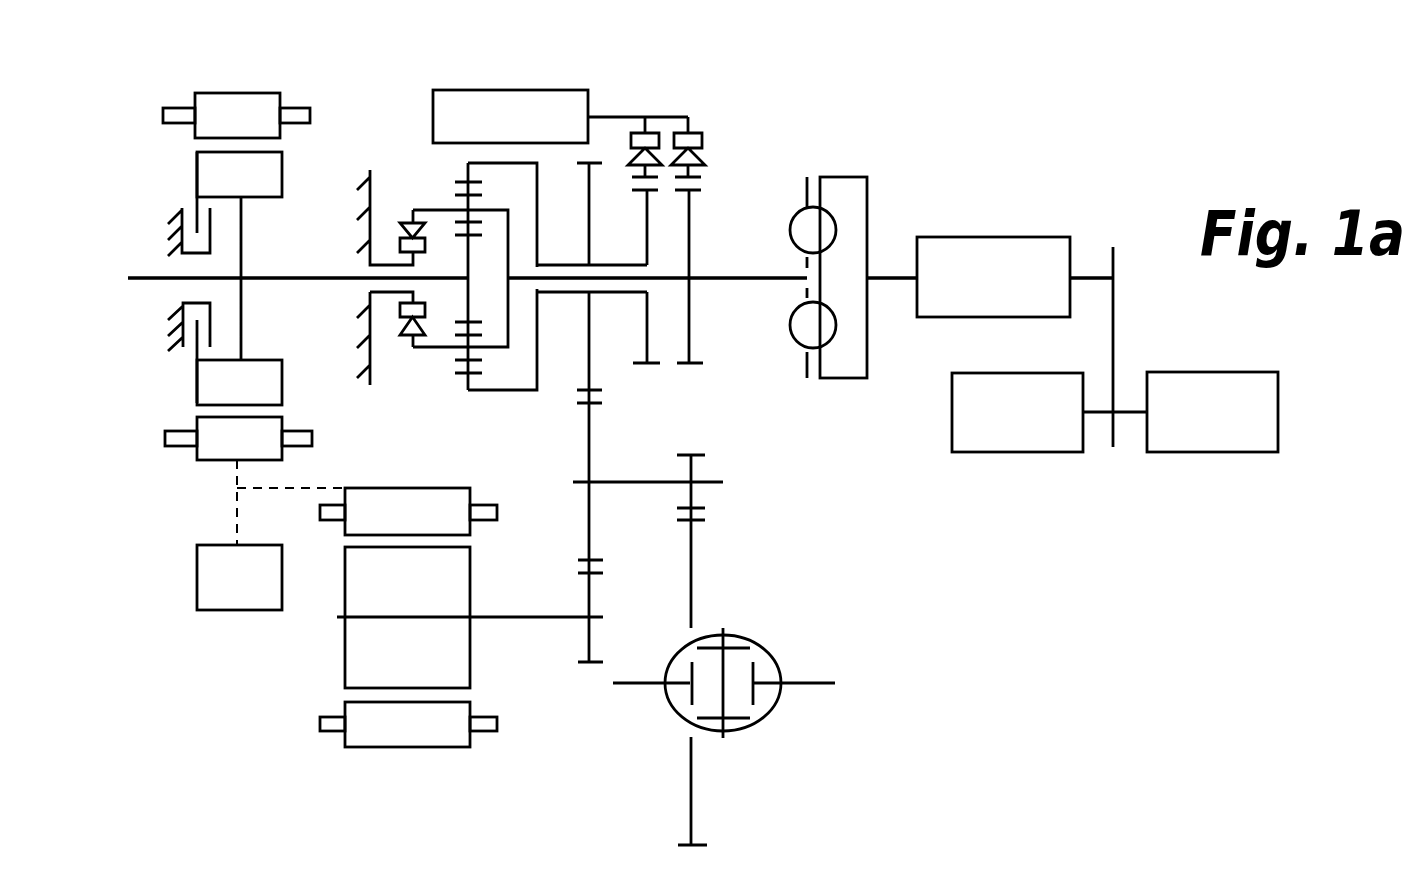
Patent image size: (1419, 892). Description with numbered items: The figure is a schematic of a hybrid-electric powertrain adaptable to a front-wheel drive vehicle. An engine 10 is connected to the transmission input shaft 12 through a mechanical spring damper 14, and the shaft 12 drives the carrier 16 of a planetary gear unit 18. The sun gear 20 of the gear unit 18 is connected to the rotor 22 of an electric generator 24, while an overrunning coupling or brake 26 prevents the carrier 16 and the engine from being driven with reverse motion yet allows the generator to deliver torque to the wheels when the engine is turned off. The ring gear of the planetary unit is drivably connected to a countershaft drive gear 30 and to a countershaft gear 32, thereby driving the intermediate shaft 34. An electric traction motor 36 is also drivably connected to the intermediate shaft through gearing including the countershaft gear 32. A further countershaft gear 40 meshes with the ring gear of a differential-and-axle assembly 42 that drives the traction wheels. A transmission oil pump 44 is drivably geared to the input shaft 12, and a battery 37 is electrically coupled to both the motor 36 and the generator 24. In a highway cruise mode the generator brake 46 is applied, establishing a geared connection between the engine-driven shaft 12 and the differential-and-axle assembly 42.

The engine 10 is at (1030, 237).
The transmission input shaft 12 is at (725, 283).
The mechanical spring damper 14 is at (807, 332).
The carrier 16 is at (428, 203).
The planetary gear unit 18 is at (502, 390).
The sun gear 20 is at (538, 243).
The rotor 22 is at (197, 203).
The electric generator 24 is at (290, 94).
The overrunning coupling or brake 26 is at (400, 230).
The countershaft drive gear 30 is at (592, 365).
The countershaft gear 32 is at (588, 508).
The intermediate shaft 34 is at (633, 487).
The electric traction motor 36 is at (472, 675).
The battery 37 is at (203, 582).
The countershaft gear 40 is at (693, 492).
The differential-and-axle assembly 42 is at (761, 727).
The transmission oil pump 44 is at (562, 90).
The generator brake 46 is at (190, 302).